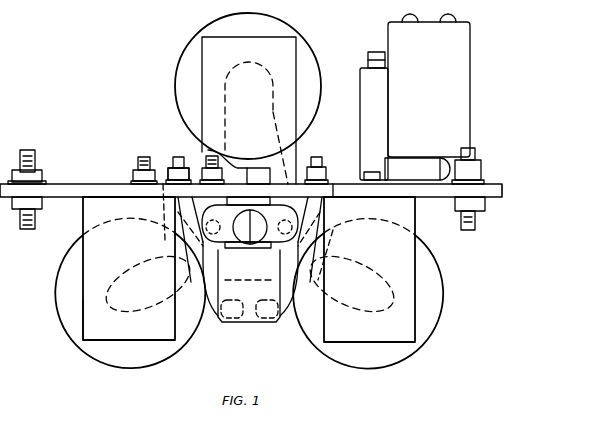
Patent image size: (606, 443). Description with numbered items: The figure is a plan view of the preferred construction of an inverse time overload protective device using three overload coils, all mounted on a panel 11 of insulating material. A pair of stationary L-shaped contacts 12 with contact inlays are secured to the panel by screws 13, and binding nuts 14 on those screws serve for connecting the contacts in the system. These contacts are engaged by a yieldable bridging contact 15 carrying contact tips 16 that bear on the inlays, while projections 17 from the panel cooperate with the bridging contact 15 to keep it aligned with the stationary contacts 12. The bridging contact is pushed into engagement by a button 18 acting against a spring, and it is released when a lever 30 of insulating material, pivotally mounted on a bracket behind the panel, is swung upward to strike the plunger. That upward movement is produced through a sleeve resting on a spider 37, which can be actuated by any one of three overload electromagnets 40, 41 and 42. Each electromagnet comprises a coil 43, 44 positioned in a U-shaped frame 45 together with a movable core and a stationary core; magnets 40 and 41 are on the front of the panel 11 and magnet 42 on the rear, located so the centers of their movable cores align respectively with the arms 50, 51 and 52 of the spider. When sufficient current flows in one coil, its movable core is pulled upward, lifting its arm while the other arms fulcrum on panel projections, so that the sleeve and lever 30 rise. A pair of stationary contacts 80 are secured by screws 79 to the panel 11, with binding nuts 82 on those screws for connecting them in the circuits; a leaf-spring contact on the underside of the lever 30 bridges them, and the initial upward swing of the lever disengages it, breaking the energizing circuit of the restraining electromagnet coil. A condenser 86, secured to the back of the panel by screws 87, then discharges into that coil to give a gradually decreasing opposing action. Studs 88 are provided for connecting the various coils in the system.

The panel 11 is at (502, 191).
The stationary L-shaped contacts 12 is at (300, 231).
The screws 13 is at (208, 163).
The binding nuts 14 is at (214, 160).
The bridging contact 15 is at (241, 247).
The contact tips 16 is at (160, 215).
The projections 17 is at (260, 200).
The button 18 is at (264, 247).
The lever 30 is at (247, 323).
The spider 37 is at (338, 250).
The overload electromagnet 40 is at (129, 269).
The overload electromagnet 41 is at (369, 269).
The overload electromagnet 42 is at (249, 110).
The coil 43 is at (311, 60).
The coil 44 is at (58, 286).
The U-shaped frame 45 is at (83, 313).
The arm 50 is at (128, 270).
The arm 51 is at (370, 268).
The arm 52 is at (262, 66).
The screws 79 is at (180, 158).
The stationary contacts 80 is at (212, 322).
The binding nuts 82 is at (170, 173).
The condenser 86 is at (472, 100).
The screws 87 is at (372, 171).
The studs 88 is at (134, 171).